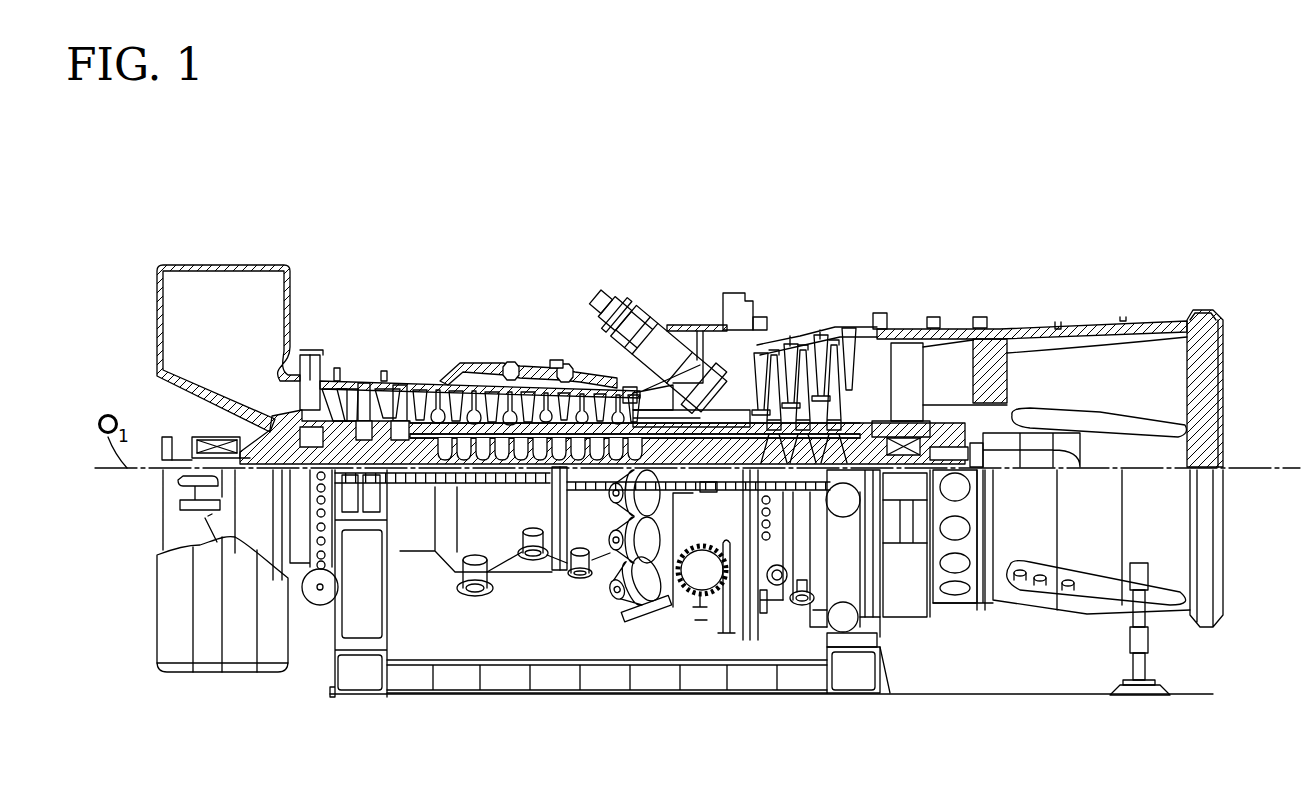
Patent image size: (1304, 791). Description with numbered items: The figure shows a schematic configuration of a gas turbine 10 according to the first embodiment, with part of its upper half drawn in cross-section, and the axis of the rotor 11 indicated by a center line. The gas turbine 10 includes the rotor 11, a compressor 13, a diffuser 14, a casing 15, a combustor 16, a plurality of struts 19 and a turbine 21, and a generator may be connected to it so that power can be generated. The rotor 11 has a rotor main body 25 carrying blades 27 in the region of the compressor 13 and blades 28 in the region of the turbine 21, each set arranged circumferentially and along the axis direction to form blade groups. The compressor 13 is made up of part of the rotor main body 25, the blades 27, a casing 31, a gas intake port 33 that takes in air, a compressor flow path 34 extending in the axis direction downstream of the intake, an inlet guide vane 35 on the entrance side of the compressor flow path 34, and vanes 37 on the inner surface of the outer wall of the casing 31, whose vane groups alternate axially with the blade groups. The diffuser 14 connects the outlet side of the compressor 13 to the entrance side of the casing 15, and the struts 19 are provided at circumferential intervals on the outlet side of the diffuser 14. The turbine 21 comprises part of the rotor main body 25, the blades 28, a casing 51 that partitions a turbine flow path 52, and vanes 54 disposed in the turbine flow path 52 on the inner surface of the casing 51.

The gas turbine 10 is at (164, 165).
The rotor 11 is at (250, 437).
The compressor 13 is at (372, 320).
The diffuser 14 is at (624, 387).
The casing 15 is at (680, 311).
The combustor 16 is at (655, 306).
The struts 19 is at (683, 410).
The turbine 21 is at (885, 308).
The rotor main body 25 is at (385, 447).
The blades 27 is at (413, 405).
The blades 28 is at (758, 393).
The casing 31 is at (366, 388).
The gas intake port 33 is at (175, 320).
The compressor flow path 34 is at (363, 390).
The inlet guide vane 35 is at (320, 397).
The vanes 37 is at (345, 400).
The casing 51 is at (848, 330).
The turbine flow path 52 is at (809, 387).
The vanes 54 is at (775, 385).